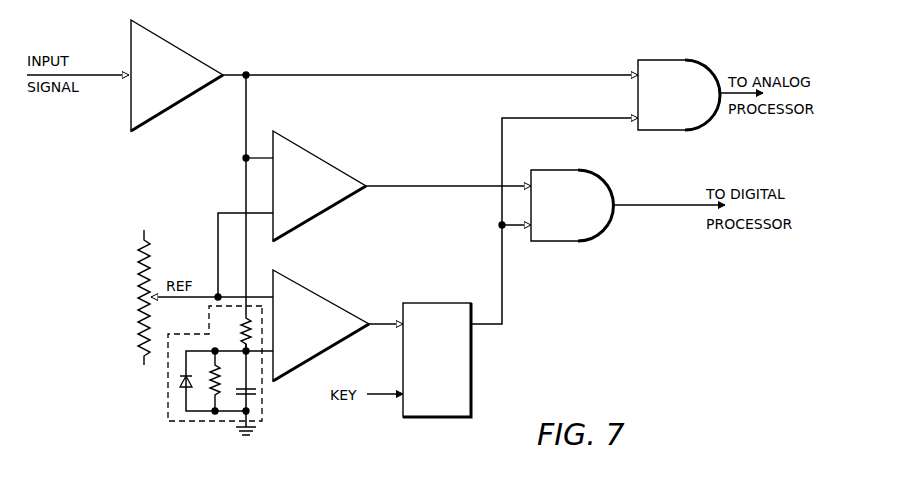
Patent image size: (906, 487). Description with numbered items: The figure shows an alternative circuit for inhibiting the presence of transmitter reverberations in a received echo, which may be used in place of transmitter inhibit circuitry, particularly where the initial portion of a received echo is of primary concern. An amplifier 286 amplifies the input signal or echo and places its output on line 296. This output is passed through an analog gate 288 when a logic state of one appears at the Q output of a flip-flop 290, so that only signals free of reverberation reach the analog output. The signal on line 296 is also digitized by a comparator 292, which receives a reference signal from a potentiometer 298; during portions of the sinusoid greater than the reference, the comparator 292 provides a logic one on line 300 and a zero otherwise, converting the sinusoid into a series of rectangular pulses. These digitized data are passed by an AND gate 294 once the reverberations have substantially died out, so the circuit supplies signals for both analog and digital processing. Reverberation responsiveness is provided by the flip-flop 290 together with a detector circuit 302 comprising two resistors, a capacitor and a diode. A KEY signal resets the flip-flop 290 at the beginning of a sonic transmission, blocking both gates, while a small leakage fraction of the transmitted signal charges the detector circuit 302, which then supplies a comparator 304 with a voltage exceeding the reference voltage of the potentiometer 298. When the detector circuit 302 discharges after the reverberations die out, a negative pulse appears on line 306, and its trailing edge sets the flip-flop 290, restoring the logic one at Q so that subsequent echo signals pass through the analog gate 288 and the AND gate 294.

The amplifier 286 is at (181, 55).
The analog gate 288 is at (708, 74).
The flip-flop 290 is at (472, 398).
The comparator 292 is at (348, 178).
The AND gate 294 is at (606, 185).
The line 296 is at (248, 122).
The potentiometer 298 is at (137, 270).
The line 300 is at (412, 186).
The detector circuit 302 is at (262, 412).
The comparator 304 is at (337, 311).
The line 306 is at (385, 318).